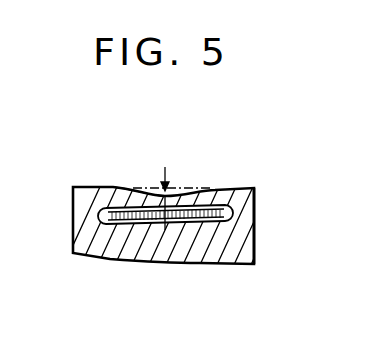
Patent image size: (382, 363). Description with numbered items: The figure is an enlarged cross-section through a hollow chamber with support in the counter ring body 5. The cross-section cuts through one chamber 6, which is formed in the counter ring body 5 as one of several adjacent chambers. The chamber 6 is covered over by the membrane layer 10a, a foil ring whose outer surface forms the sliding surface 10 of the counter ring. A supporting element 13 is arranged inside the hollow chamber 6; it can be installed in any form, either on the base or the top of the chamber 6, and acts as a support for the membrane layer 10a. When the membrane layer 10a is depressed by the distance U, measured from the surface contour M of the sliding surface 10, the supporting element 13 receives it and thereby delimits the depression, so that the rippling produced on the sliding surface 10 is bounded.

The counter ring body 5 is at (80, 188).
The chamber 6 is at (236, 190).
The sliding surface 10 is at (197, 199).
The membrane layer 10a is at (132, 198).
The supporting element 13 is at (183, 224).
The depression distance U is at (173, 188).
The surface contour M is at (210, 187).